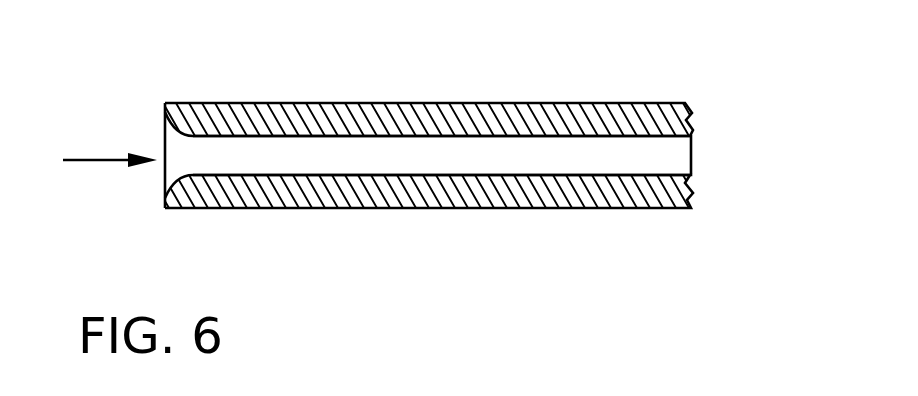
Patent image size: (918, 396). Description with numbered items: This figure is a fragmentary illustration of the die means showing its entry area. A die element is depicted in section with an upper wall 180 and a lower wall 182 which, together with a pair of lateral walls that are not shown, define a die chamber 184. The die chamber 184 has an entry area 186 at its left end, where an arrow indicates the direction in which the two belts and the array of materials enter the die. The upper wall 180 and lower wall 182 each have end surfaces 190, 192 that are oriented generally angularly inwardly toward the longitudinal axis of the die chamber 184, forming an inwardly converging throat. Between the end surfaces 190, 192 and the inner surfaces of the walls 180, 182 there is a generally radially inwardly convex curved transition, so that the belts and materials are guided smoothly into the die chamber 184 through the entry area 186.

The upper wall 180 is at (460, 102).
The lower wall 182 is at (440, 208).
The die chamber 184 is at (668, 152).
The entry area 186 is at (172, 148).
The end surface 190 is at (175, 127).
The end surface 192 is at (173, 187).